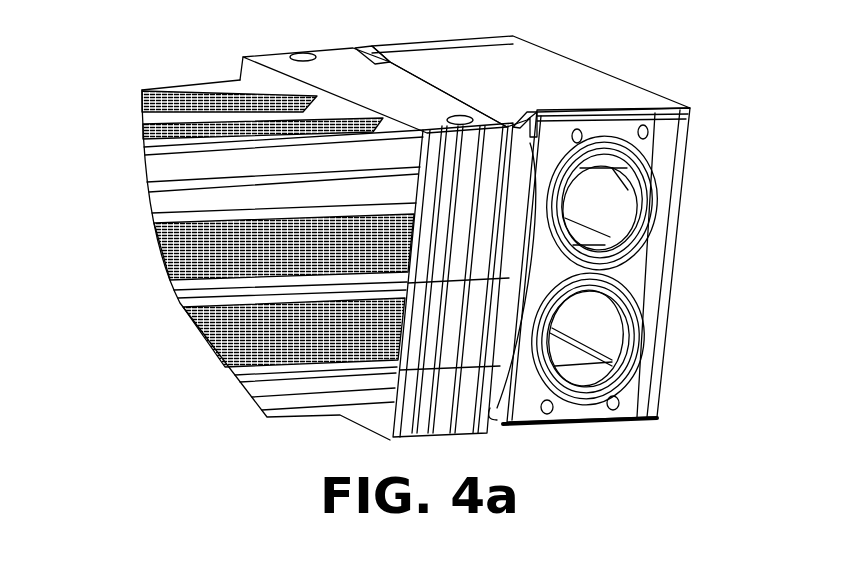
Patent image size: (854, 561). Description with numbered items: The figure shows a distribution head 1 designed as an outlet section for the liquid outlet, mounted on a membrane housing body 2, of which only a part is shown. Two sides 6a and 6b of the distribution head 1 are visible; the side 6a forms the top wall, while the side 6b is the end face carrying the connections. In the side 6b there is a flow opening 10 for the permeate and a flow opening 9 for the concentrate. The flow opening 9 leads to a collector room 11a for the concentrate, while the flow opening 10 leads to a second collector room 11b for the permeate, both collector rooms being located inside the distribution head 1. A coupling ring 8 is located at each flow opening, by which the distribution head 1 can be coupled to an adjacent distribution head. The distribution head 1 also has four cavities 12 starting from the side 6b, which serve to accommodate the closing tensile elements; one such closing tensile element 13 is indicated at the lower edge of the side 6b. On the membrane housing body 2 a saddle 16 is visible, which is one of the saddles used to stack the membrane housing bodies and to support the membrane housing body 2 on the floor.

The distribution head 1 is at (540, 80).
The membrane housing body 2 is at (218, 93).
The side 6a is at (503, 80).
The side 6b is at (633, 277).
The coupling ring 8 is at (652, 217).
The flow opening 9 is at (628, 185).
The flow opening 10 is at (607, 340).
The collector room 11a is at (600, 207).
The collector room 11b is at (586, 337).
The cavities 12 is at (645, 127).
The closing tensile element 13 is at (550, 414).
The saddle 16 is at (337, 53).